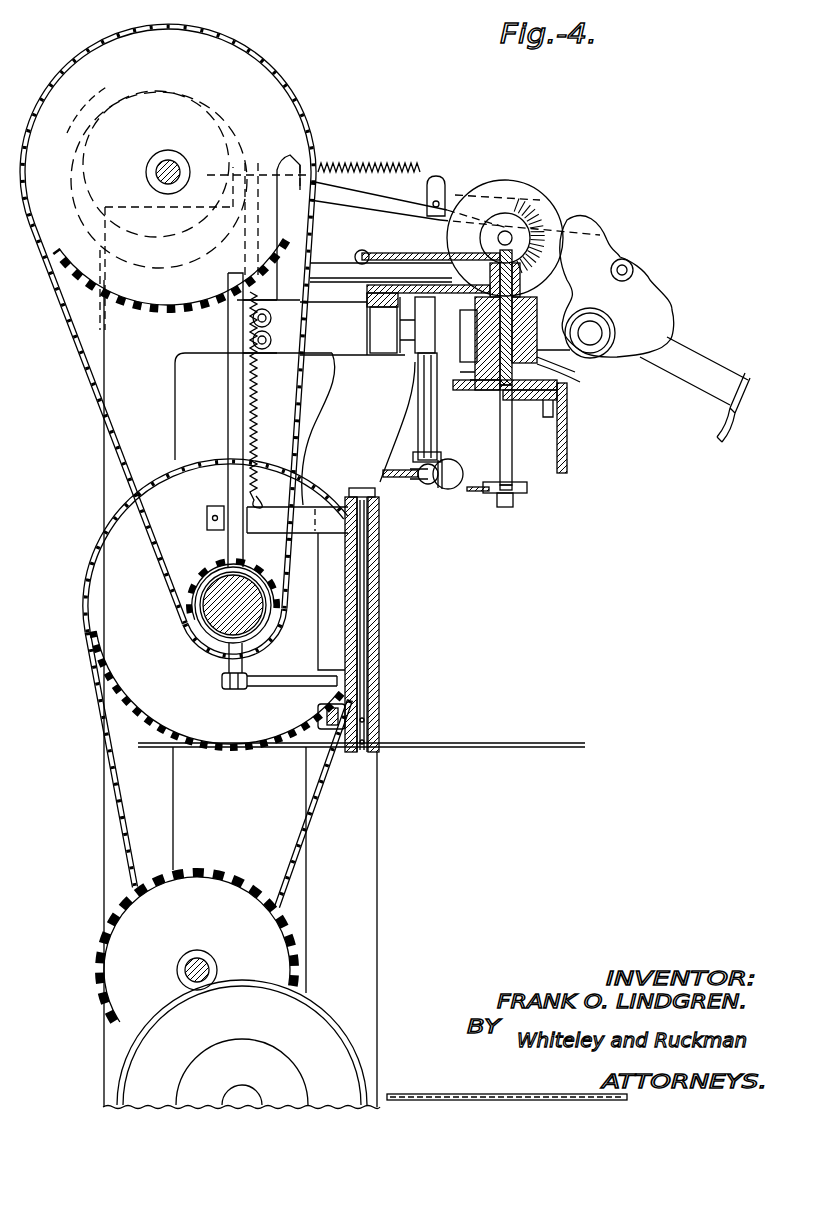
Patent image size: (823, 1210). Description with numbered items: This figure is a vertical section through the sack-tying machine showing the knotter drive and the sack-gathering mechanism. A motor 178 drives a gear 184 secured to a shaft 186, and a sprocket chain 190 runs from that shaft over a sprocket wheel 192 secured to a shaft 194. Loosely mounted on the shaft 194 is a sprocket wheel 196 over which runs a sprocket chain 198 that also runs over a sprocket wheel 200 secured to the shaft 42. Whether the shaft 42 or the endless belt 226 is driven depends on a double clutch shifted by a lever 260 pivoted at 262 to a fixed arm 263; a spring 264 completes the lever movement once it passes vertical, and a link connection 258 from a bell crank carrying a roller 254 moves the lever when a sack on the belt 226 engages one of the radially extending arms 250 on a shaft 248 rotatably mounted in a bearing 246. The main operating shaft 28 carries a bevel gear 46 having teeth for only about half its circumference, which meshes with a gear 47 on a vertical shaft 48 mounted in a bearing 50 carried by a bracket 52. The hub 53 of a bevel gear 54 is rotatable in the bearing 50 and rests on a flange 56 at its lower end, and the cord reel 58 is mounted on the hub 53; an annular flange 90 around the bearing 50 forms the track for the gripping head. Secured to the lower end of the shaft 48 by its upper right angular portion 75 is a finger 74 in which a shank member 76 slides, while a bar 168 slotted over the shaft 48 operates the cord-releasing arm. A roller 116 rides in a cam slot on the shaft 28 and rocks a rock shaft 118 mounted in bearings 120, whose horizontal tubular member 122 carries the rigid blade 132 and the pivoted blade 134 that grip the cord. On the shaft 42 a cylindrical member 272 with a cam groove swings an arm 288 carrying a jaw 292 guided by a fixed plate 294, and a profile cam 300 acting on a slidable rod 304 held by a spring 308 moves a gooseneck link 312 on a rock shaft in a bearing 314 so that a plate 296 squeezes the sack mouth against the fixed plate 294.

The main operating shaft 28 is at (512, 236).
The shaft 42 is at (163, 167).
The bevel gear 46 is at (512, 205).
The gear 47 is at (520, 290).
The vertical shaft 48 is at (513, 405).
The bearing 50 is at (522, 318).
The bracket 52 is at (404, 285).
The hub 53 is at (470, 369).
The bevel gear 54 is at (463, 336).
The flange 56 is at (490, 384).
The reel 58 is at (560, 366).
The finger 74 is at (568, 440).
The upper right angular portion 75 is at (546, 411).
The shank member 76 is at (560, 392).
The annular flange 90 is at (575, 378).
The roller 116 is at (428, 300).
The rock shaft 118 is at (420, 426).
The bearings 120 is at (420, 345).
The horizontal tubular member 122 is at (463, 474).
The rigid blade 132 is at (420, 470).
The pivoted blade 134 is at (388, 471).
The bar 168 is at (382, 250).
The motor 178 is at (300, 1030).
The gear 184 is at (270, 950).
The shaft 186 is at (207, 965).
The sprocket chain 190 is at (292, 832).
The sprocket wheel 192 is at (136, 690).
The shaft 194 is at (226, 611).
The sprocket wheel 196 is at (200, 578).
The sprocket chain 198 is at (104, 460).
The sprocket wheel 200 is at (92, 274).
The endless belt 226 is at (408, 1093).
The bearing 246 is at (380, 585).
The shaft 248 is at (364, 630).
The radially extending arms 250 is at (470, 742).
The roller 254 is at (318, 716).
The link connection 258 is at (278, 686).
The lever 260 is at (230, 410).
The pivot 262 is at (228, 515).
The fixed arm 263 is at (322, 508).
The spring 264 is at (254, 410).
The cylindrical member 272 is at (228, 135).
The arm 288 is at (514, 470).
The jaw 292 is at (520, 495).
The fixed plate 294 is at (484, 493).
The plate 296 is at (722, 442).
The profile cam 300 is at (82, 118).
The slidable rod 304 is at (346, 190).
The spring 308 is at (420, 182).
The gooseneck link 312 is at (660, 295).
The bearing 314 is at (602, 333).